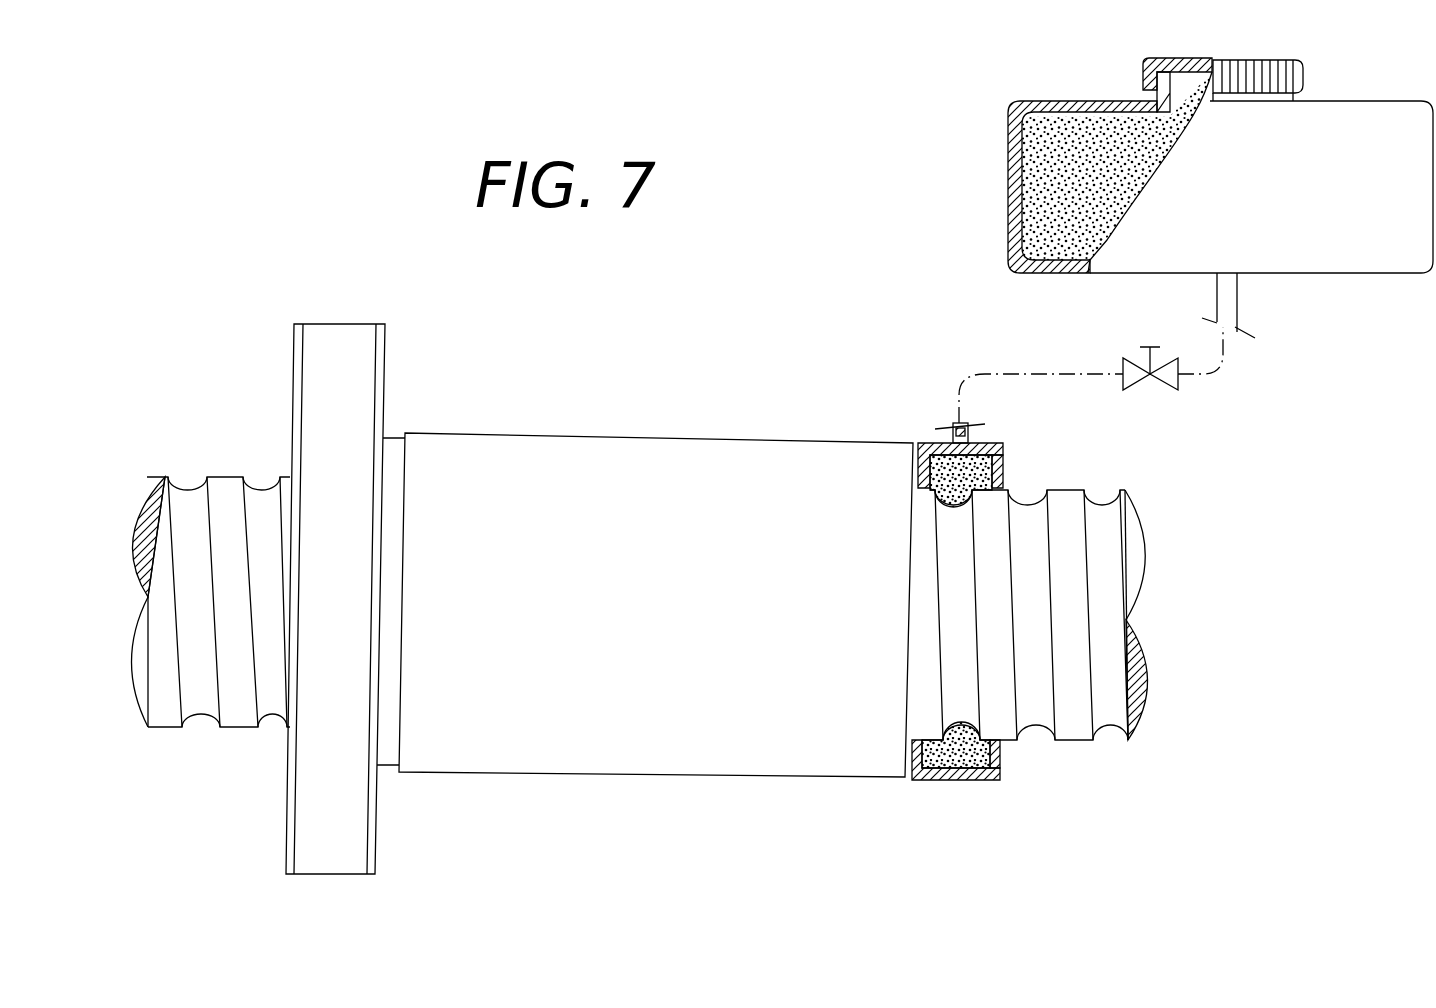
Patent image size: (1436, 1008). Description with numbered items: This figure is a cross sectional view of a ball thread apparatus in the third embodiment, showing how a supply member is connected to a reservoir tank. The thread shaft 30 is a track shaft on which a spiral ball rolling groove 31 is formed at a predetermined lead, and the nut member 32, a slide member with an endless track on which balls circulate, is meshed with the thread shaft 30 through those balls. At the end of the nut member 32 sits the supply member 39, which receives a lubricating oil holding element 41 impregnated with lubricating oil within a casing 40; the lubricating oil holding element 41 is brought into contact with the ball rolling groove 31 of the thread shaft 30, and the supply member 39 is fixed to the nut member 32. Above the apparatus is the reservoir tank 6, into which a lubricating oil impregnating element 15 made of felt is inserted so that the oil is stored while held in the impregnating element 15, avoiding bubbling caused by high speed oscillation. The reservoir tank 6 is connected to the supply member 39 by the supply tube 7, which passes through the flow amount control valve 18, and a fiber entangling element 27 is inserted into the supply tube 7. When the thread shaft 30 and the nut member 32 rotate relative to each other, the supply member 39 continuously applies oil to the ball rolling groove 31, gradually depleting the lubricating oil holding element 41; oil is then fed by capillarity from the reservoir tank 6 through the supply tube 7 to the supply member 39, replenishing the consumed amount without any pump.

The reservoir tank 6 is at (1007, 168).
The supply tube 7 is at (1232, 302).
The lubricating oil impregnating element 15 is at (1040, 140).
The flow amount control valve 18 is at (1159, 400).
The fiber entangling element 27 is at (948, 428).
The thread shaft 30 is at (1112, 752).
The ball rolling groove 31 is at (1035, 710).
The nut member 32 is at (567, 422).
The supply member 39 is at (945, 796).
The casing 40 is at (985, 782).
The lubricating oil holding element 41 is at (928, 778).